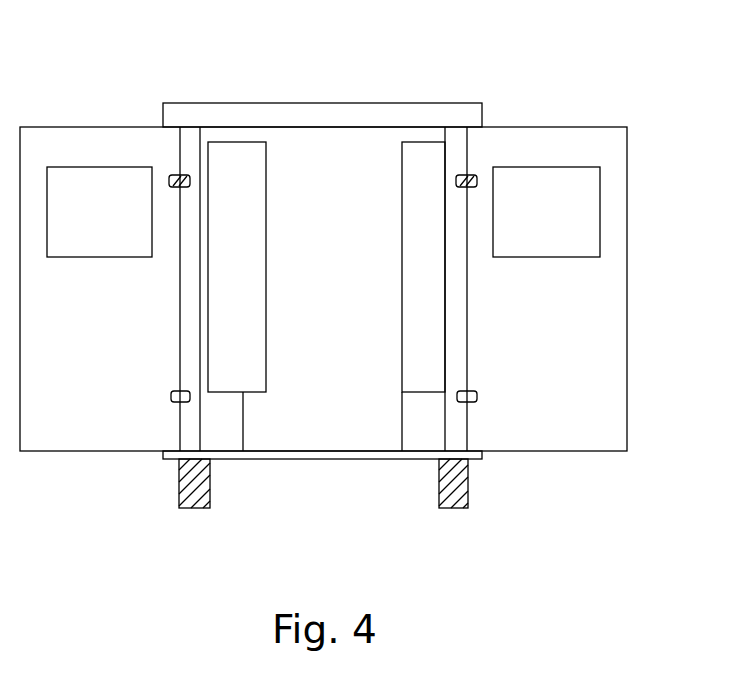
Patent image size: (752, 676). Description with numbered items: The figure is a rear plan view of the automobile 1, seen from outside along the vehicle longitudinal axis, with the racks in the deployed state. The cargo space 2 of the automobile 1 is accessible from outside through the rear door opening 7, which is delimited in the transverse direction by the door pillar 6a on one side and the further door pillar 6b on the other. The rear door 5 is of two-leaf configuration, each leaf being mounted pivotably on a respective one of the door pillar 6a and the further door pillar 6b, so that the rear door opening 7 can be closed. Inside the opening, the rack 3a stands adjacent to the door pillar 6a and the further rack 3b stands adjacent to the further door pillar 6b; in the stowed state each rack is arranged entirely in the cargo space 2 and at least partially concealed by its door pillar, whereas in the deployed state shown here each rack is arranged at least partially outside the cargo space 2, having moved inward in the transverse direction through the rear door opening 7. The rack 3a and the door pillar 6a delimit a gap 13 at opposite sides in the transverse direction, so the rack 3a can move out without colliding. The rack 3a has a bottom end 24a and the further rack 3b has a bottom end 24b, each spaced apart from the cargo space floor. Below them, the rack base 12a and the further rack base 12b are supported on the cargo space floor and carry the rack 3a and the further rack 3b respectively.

The automobile 1 is at (655, 292).
The cargo space 2 is at (288, 420).
The rack 3a is at (274, 167).
The further rack 3b is at (402, 173).
The rear door 5 is at (70, 452).
The door pillar 6a is at (192, 433).
The further door pillar 6b is at (458, 435).
The rear door opening 7 is at (323, 152).
The rack base 12a is at (243, 420).
The further rack base 12b is at (398, 410).
The gap 13 is at (204, 148).
The bottom end of the rack 24a is at (213, 400).
The bottom end of the further rack 24b is at (413, 396).